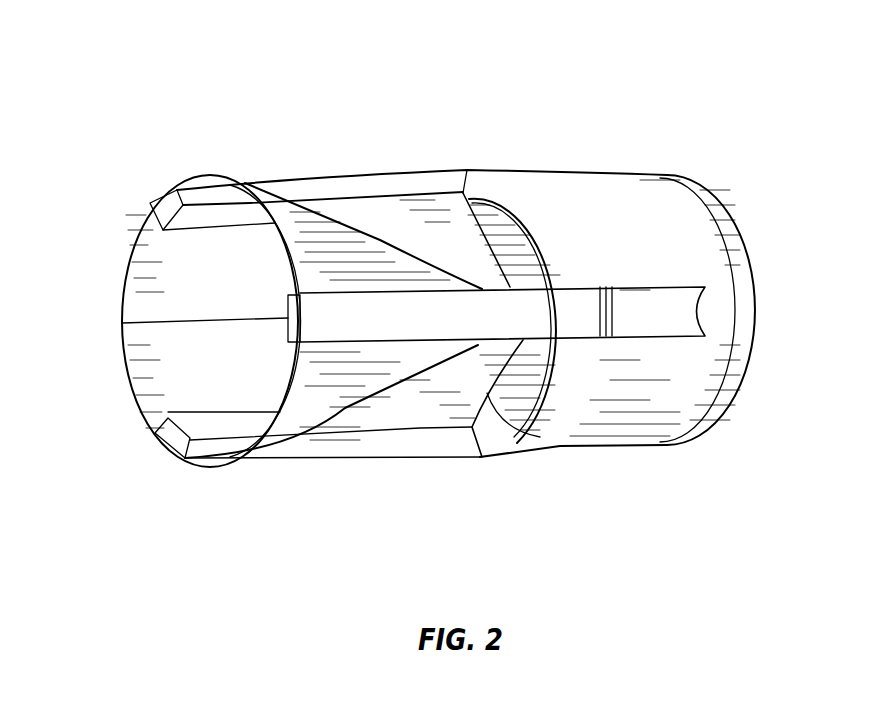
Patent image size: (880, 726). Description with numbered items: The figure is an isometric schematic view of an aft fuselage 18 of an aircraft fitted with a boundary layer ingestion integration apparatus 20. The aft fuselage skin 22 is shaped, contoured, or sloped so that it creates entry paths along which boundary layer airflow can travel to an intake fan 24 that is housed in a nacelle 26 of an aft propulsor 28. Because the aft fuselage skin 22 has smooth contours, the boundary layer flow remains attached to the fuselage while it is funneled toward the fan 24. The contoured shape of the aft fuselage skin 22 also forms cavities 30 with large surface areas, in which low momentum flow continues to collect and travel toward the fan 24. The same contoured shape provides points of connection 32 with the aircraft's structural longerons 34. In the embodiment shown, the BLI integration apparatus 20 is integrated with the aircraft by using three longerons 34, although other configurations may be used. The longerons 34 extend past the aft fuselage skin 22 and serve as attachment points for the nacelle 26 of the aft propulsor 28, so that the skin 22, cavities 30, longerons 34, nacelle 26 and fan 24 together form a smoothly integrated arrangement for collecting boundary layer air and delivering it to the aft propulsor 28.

The aft fuselage 18 is at (122, 300).
The BLI integration apparatus 20 is at (188, 76).
The aft fuselage skin 22 is at (440, 254).
The intake fan 24 is at (556, 380).
The nacelle 26 is at (678, 252).
The aft propulsor 28 is at (708, 200).
The cavities 30 is at (527, 219).
The points of connection 32 is at (165, 208).
The structural longerons 34 is at (370, 183).